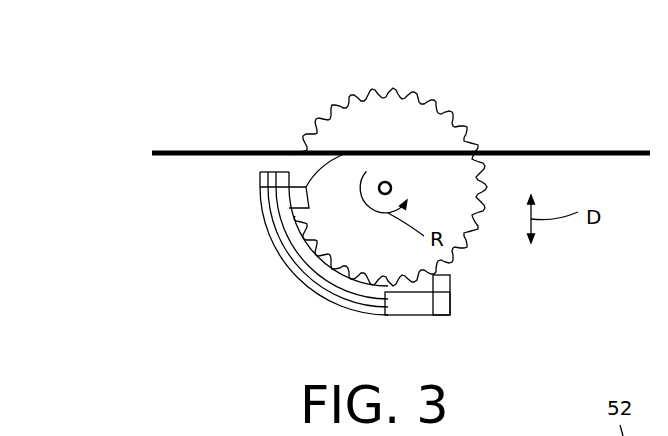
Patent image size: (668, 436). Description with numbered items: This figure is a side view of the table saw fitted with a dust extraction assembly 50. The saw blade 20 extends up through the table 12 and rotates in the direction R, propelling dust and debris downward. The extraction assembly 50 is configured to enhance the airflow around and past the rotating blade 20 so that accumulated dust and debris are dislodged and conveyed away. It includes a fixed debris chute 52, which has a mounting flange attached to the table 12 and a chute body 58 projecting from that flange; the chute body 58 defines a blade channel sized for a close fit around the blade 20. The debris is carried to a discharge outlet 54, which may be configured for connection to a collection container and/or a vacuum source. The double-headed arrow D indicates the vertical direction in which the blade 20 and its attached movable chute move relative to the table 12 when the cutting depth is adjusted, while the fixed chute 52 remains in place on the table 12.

The table structure 12 is at (580, 150).
The blade 20 is at (433, 128).
The dust extraction assembly 50 is at (281, 262).
The fixed debris chute 52 is at (273, 163).
The discharge outlet 54 is at (437, 301).
The chute body 58 is at (300, 168).